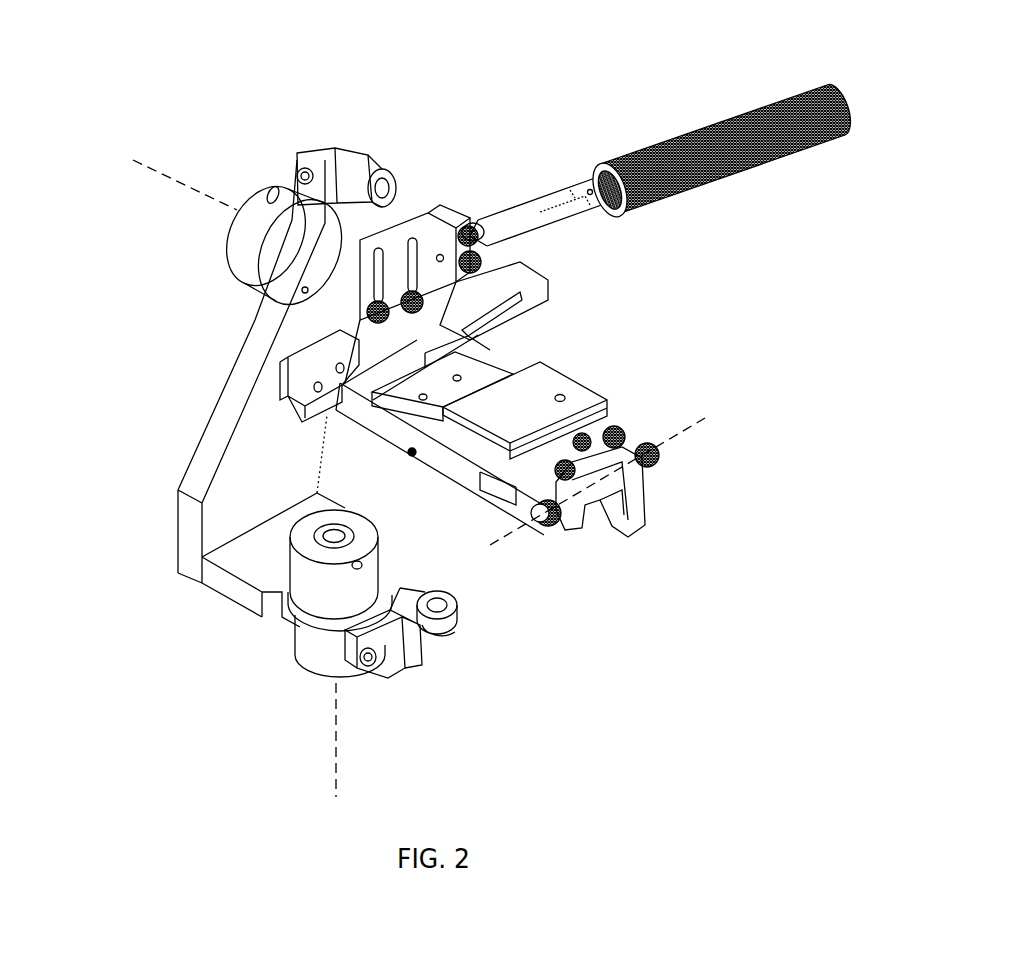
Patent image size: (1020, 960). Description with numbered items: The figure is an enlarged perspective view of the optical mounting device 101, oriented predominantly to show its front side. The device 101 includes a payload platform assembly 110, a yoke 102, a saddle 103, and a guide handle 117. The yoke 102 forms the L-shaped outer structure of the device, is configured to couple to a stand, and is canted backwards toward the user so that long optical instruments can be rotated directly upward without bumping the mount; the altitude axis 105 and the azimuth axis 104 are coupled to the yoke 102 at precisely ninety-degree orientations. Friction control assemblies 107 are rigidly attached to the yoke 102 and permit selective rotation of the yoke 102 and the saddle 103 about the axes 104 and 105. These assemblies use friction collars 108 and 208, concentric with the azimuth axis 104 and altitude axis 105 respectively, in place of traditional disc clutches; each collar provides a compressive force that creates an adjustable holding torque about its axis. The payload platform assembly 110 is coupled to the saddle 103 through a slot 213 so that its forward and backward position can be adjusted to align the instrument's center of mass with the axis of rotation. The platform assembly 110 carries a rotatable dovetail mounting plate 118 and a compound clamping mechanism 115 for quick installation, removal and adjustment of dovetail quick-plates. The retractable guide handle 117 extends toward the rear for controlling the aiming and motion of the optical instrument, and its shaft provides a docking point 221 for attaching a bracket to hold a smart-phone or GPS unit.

The optical mounting device 101 is at (232, 66).
The yoke 102 is at (178, 528).
The saddle 103 is at (520, 297).
The azimuth axis 104 is at (335, 752).
The altitude axis 105 is at (168, 177).
The friction control assembly 107 is at (226, 241).
The friction collar 108 is at (414, 661).
The payload platform assembly 110 is at (492, 366).
The compound clamping mechanism 115 is at (602, 477).
The guide handle 117 is at (630, 214).
The rotatable dovetail mounting plate 118 is at (610, 393).
The friction collar 208 is at (350, 162).
The slot 213 is at (328, 406).
The docking point 221 is at (565, 198).